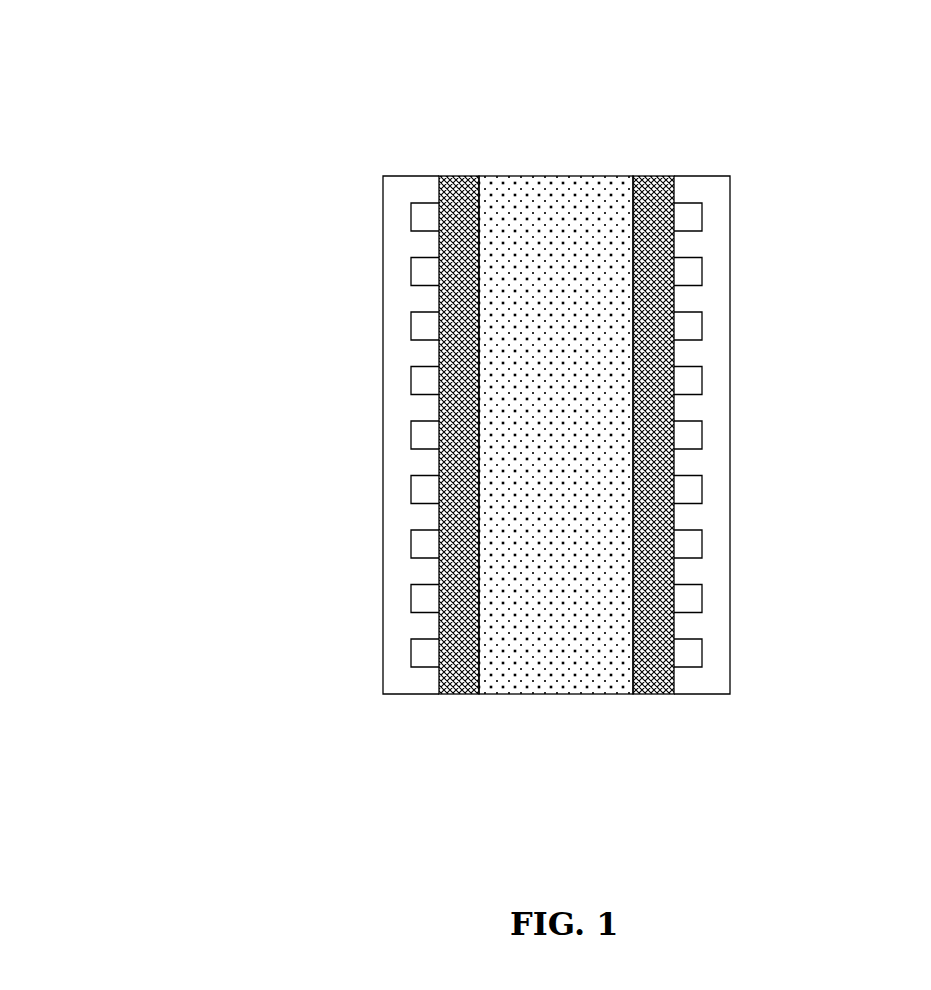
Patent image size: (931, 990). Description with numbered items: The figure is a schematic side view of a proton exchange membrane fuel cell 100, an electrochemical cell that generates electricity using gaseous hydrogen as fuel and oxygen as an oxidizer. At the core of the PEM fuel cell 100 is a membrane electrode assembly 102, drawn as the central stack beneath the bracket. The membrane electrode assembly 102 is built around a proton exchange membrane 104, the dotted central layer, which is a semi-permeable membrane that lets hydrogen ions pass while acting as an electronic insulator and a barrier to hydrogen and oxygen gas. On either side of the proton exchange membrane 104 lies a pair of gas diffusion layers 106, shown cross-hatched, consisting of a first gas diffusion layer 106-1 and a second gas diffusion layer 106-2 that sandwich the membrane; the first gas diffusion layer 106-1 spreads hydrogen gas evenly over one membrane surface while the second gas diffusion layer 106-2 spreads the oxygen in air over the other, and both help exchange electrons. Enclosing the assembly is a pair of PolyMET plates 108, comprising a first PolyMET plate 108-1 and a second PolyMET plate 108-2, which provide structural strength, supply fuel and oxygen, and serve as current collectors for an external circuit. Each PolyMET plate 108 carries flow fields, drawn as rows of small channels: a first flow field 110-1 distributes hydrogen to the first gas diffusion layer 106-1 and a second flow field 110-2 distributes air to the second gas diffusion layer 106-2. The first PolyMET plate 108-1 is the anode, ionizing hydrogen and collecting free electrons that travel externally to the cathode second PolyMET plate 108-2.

The proton exchange membrane fuel cell 100 is at (134, 64).
The membrane electrode assembly 102 is at (674, 176).
The proton exchange membrane 104 is at (533, 177).
The gas diffusion layer 106 is at (371, 66).
The first gas diffusion layer 106-1 is at (459, 177).
The second gas diffusion layer 106-2 is at (661, 177).
The PolyMET plate 108 is at (349, 206).
The first PolyMET plate 108-1 is at (413, 696).
The second PolyMET plate 108-2 is at (687, 696).
The first flow field 110-1 is at (428, 385).
The second flow field 110-2 is at (688, 388).